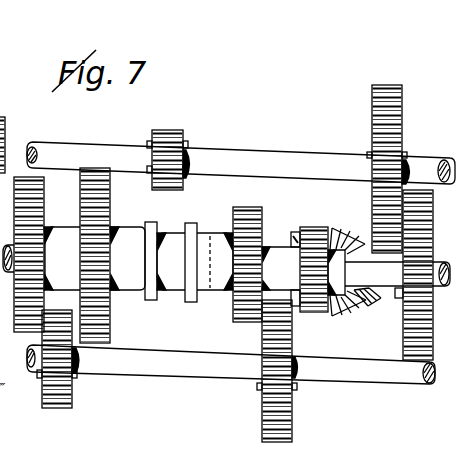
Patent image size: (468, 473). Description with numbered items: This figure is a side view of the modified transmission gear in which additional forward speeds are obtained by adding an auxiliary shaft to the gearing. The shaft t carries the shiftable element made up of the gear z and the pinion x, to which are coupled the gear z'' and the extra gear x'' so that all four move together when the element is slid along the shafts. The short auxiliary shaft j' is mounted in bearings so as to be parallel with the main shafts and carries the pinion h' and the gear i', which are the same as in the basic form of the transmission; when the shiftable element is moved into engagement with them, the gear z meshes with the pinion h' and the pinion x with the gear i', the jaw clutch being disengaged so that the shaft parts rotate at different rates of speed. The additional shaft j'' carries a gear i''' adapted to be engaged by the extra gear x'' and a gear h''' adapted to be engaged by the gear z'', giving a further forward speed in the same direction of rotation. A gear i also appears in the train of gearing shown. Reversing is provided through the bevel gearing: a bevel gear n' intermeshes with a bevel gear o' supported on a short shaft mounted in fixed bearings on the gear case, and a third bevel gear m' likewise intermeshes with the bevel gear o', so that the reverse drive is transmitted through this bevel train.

The gear i is at (5, 130).
The gear i' is at (393, 169).
The gear on shaft j'' i''' is at (282, 371).
The pinion h' is at (177, 150).
The gear h''' is at (71, 363).
The short auxiliary shaft j' is at (241, 153).
The additional shaft j'' is at (231, 381).
The gear z is at (103, 255).
The gear z'' is at (40, 254).
The pinion x is at (322, 254).
The extra gear x'' is at (261, 259).
The third bevel gear m' is at (282, 261).
The bevel gear n' is at (353, 284).
The bevel gear o' is at (359, 314).
The shaft t is at (397, 274).